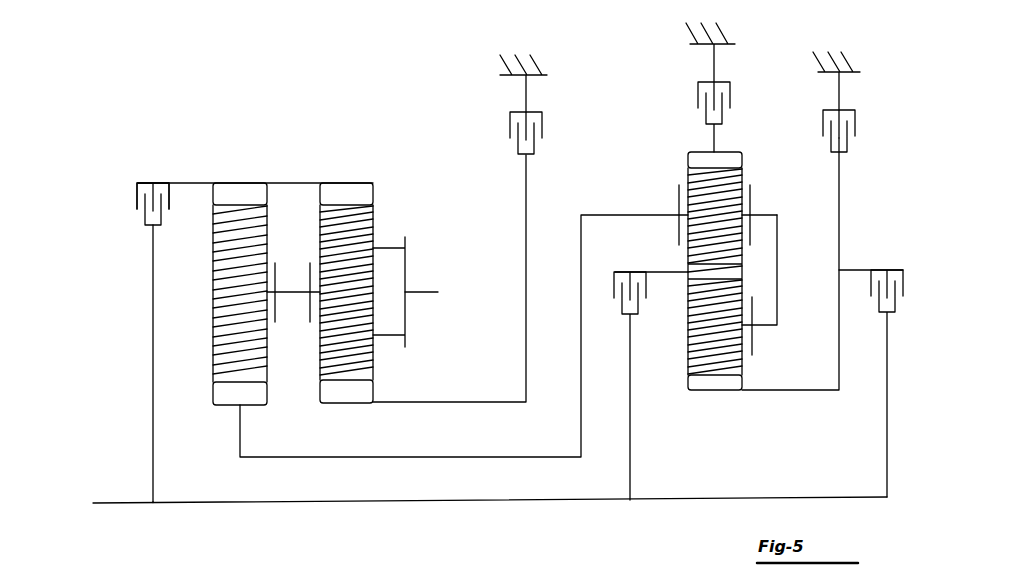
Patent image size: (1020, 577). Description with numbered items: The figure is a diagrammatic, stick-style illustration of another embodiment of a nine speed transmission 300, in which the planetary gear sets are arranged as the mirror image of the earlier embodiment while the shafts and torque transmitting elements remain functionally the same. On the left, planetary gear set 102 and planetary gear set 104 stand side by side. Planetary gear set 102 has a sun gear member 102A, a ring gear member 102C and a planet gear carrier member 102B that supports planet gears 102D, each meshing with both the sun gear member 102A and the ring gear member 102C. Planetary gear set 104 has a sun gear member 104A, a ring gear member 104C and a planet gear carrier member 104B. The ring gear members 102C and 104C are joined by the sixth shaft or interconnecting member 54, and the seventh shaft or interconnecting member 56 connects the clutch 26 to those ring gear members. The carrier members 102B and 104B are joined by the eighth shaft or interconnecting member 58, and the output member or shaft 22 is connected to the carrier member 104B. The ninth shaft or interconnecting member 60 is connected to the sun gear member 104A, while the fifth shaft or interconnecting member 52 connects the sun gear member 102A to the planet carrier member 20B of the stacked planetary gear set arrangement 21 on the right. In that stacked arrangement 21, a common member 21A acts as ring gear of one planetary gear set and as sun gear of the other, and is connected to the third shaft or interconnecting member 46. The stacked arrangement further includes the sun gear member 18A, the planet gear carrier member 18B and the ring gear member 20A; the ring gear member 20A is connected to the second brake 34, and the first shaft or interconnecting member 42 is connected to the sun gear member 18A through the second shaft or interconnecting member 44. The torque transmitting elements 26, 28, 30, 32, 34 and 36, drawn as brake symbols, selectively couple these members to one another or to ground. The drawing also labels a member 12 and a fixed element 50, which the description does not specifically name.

The nine speed transmission 300 is at (268, 88).
The input shaft 12 is at (153, 387).
The output member or shaft 22 is at (438, 292).
The clutch 26 is at (138, 206).
The torque transmitting element 28 is at (903, 292).
The torque transmitting element 30 is at (613, 290).
The torque transmitting element 32 is at (857, 125).
The second brake 34 is at (732, 88).
The torque transmitting element 36 is at (542, 127).
The first shaft or interconnecting member 42 is at (840, 204).
The second shaft or interconnecting member 44 is at (839, 280).
The third shaft or interconnecting member 46 is at (667, 272).
The stationary housing 50 is at (510, 76).
The fifth shaft or interconnecting member 52 is at (395, 458).
The sixth shaft or interconnecting member 54 is at (295, 181).
The seventh shaft or interconnecting member 56 is at (183, 182).
The eighth shaft or interconnecting member 58 is at (295, 290).
The ninth shaft or interconnecting member 60 is at (442, 402).
The planetary gear set 102 is at (238, 272).
The sun gear member 102A is at (225, 392).
The planet gear carrier member 102B is at (275, 323).
The ring gear member 102C is at (238, 192).
The planet gears 102D is at (213, 278).
The planetary gear set 104 is at (379, 282).
The sun gear member 104A is at (347, 393).
The planet gear carrier member 104B is at (407, 323).
The ring gear member 104C is at (343, 190).
The stacked planetary gear set arrangement 21 is at (717, 268).
The common member 21A is at (703, 270).
The ring gear member 20A is at (728, 153).
The planet gear carrier member 20B is at (678, 193).
The sun gear member 18A is at (707, 383).
The planet gear carrier member 18B is at (753, 343).